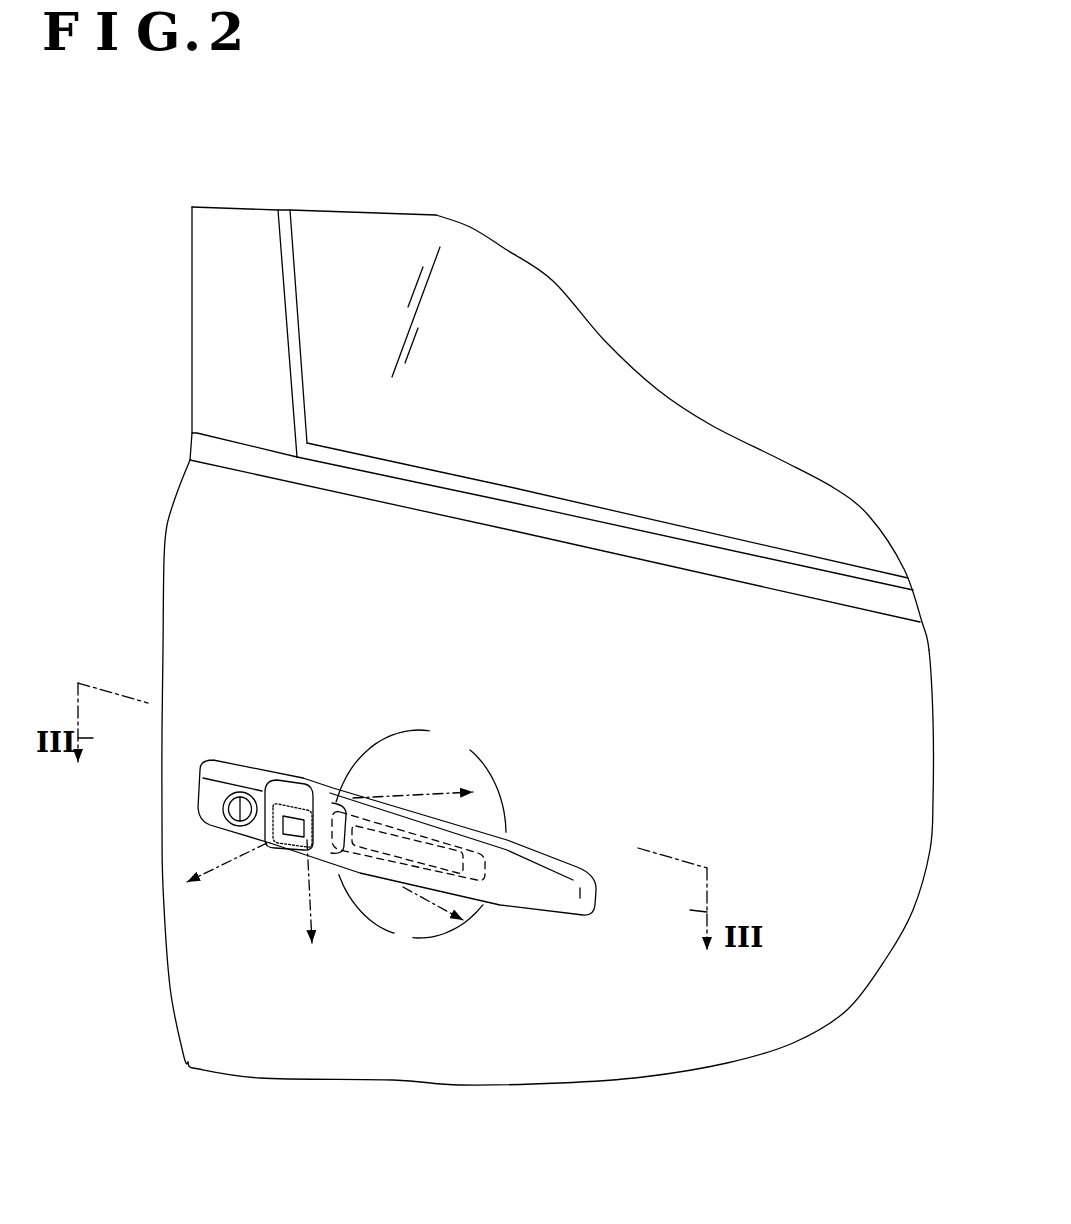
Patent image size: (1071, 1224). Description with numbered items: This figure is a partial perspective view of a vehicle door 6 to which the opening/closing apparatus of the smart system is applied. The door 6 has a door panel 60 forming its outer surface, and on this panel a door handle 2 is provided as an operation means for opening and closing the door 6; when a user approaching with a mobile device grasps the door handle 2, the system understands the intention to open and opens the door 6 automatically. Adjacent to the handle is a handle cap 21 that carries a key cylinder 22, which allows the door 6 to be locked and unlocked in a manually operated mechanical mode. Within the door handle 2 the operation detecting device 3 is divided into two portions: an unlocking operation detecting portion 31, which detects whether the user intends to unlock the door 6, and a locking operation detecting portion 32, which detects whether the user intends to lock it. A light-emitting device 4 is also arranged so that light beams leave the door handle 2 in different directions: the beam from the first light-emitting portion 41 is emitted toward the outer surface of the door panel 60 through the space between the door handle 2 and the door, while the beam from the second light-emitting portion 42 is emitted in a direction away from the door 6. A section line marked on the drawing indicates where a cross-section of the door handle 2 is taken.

The door handle lever 2 is at (408, 839).
The antenna unit 3 is at (419, 776).
The sensor unit 4 is at (396, 812).
The vehicle door 6 is at (498, 646).
The handle base 21 is at (191, 782).
The key cylinder 22 is at (235, 797).
The antenna 31 is at (483, 857).
The antenna frame 32 is at (270, 800).
The sensor 41 is at (323, 780).
The sensor 42 is at (293, 840).
The door outer panel 60 is at (237, 1037).